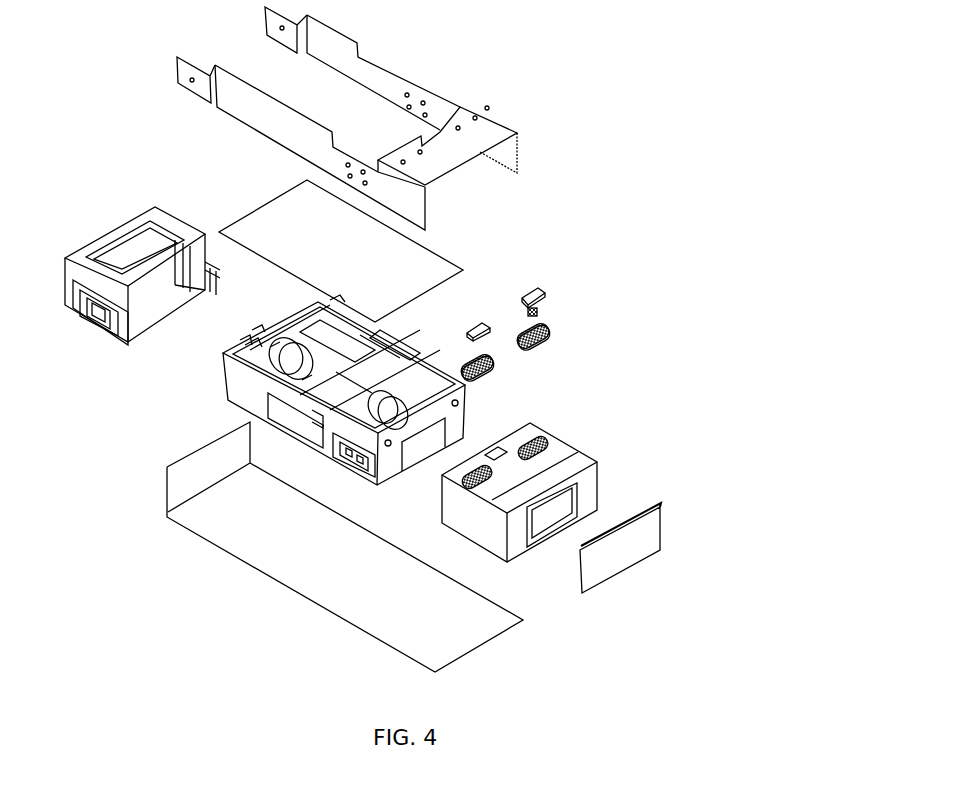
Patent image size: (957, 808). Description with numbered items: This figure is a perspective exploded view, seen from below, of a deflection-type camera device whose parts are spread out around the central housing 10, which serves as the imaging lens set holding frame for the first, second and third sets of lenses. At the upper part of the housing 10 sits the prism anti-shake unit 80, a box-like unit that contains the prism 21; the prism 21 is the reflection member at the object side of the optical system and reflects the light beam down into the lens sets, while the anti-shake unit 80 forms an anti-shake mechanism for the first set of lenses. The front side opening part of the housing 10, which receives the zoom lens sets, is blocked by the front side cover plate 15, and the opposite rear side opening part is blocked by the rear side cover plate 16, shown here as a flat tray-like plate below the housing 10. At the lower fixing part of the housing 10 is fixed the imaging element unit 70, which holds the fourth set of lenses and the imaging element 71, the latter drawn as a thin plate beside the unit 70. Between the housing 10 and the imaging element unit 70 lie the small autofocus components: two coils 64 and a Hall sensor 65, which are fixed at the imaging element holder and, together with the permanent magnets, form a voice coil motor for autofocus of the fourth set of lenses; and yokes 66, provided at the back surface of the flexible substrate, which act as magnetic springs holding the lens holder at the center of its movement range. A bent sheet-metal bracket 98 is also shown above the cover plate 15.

The bracket 98 is at (492, 138).
The front side cover plate 15 is at (418, 275).
The prism 21 is at (127, 250).
The prism anti-shake unit 80 is at (72, 302).
The housing 10 is at (250, 400).
The yokes for autofocus of the fourth set of lenses 66 is at (542, 283).
The Hall sensor for autofocus of the fourth set of lenses 65 is at (540, 315).
The coils for autofocus of the fourth set of lenses 64 is at (552, 338).
The imaging element unit 70 is at (550, 458).
The imaging element 71 is at (632, 542).
The rear side cover plate 16 is at (273, 555).